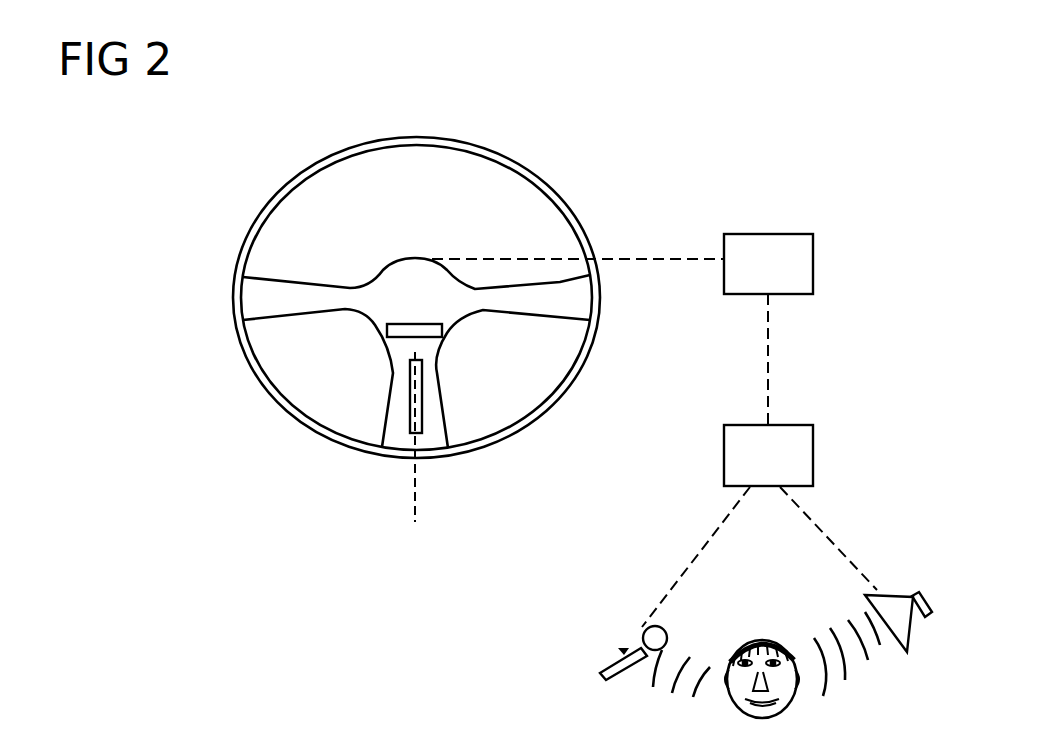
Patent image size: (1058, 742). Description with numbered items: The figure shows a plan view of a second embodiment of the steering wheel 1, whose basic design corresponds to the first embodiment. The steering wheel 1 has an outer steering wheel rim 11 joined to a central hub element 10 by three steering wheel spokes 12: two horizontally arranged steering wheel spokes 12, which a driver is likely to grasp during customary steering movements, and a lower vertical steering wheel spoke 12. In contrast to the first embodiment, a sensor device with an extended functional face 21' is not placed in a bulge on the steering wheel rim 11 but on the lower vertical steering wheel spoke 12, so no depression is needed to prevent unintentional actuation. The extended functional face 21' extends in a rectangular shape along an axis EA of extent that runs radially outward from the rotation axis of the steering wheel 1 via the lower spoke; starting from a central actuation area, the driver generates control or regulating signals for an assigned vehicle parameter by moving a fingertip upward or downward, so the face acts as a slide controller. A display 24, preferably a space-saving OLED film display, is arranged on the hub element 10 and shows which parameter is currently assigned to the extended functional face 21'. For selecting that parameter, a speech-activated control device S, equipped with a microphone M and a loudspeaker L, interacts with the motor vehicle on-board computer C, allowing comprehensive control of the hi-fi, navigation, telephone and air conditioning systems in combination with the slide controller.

The steering wheel 1 is at (205, 231).
The steering wheel rim 11 is at (407, 138).
The hub element 10 is at (400, 298).
The steering wheel spoke 12 is at (267, 298).
The display 24 is at (422, 328).
The extended functional face 21' is at (475, 388).
The axis of extent EA is at (413, 477).
The motor vehicle on-board computer C is at (768, 264).
The speech-activated control device S is at (768, 455).
The microphone M is at (627, 663).
The loudspeaker L is at (917, 633).